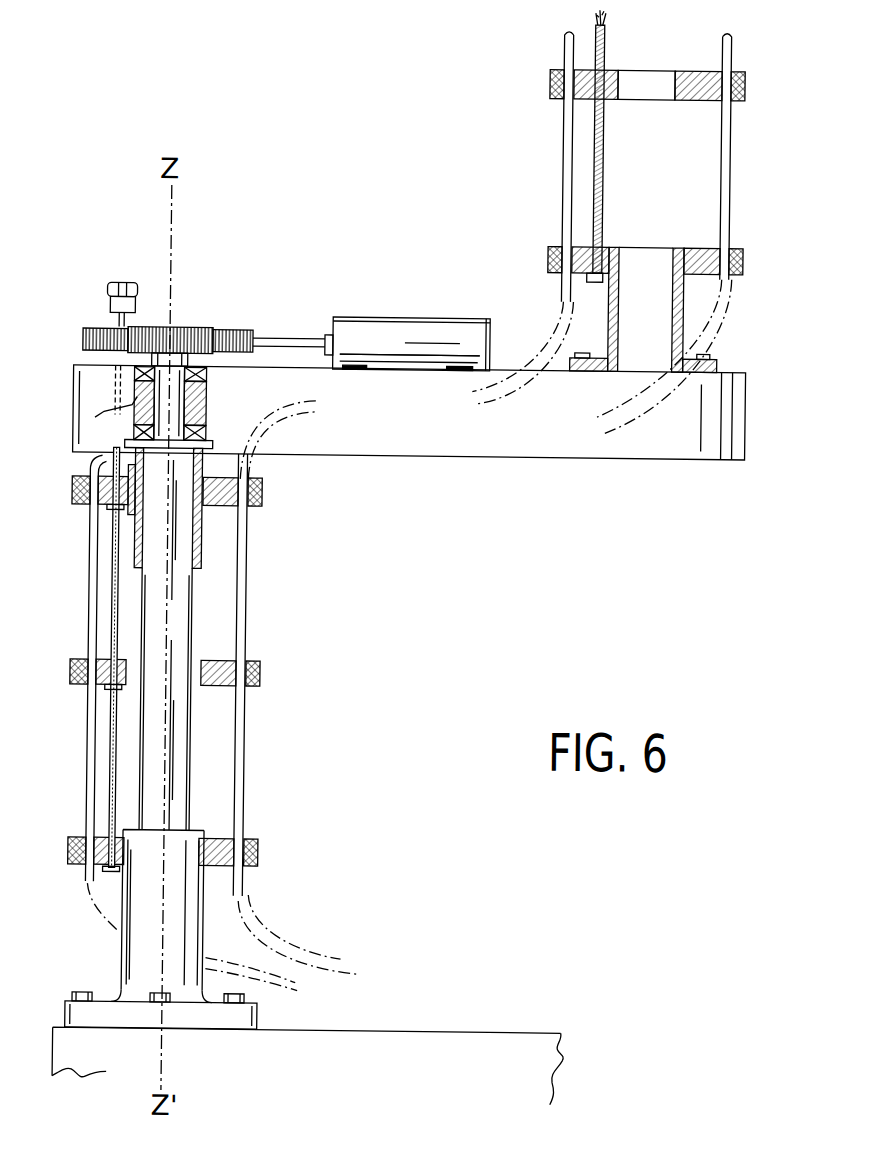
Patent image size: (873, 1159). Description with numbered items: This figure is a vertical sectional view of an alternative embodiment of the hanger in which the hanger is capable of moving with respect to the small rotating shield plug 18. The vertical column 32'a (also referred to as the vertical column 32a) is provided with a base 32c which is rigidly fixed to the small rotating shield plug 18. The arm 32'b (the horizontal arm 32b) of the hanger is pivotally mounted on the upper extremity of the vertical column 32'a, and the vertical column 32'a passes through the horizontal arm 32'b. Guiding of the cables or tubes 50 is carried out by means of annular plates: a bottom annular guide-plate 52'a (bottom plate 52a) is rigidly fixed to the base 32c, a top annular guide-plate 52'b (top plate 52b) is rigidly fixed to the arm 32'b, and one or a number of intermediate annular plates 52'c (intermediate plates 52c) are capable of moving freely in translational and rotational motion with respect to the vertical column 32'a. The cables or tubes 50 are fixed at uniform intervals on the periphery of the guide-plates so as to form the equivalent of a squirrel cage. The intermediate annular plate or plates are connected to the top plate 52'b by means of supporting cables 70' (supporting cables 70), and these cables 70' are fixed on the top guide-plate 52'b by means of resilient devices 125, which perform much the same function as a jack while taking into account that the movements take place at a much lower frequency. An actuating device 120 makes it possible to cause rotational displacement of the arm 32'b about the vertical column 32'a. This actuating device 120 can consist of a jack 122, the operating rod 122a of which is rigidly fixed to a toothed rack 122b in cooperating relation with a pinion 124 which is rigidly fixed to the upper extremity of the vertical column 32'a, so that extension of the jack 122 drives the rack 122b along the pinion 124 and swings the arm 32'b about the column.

The small rotating shield plug 18 is at (520, 1028).
The arm 32'b is at (409, 452).
The horizontal arm 32b is at (409, 452).
The vertical column 32'a is at (243, 643).
The vertical column 32a is at (243, 643).
The base 32c is at (230, 1013).
The top annular guide-plate 52'b is at (217, 504).
The upper flange 52b is at (217, 504).
The intermediate annular plate 52'c is at (214, 701).
The middle flange 52c is at (214, 701).
The bottom annular guide-plate 52'a is at (210, 889).
The lower flange 52a is at (210, 889).
The supporting cables 70' is at (146, 659).
The threaded rod 70 is at (146, 659).
The cables or tubes 50 is at (240, 603).
The pinion 124 is at (170, 342).
The resilient devices 125 is at (112, 327).
The toothed rack 122b is at (237, 328).
The operating rod 122a is at (282, 341).
The actuating device 120 is at (431, 305).
The jack 122 is at (375, 344).